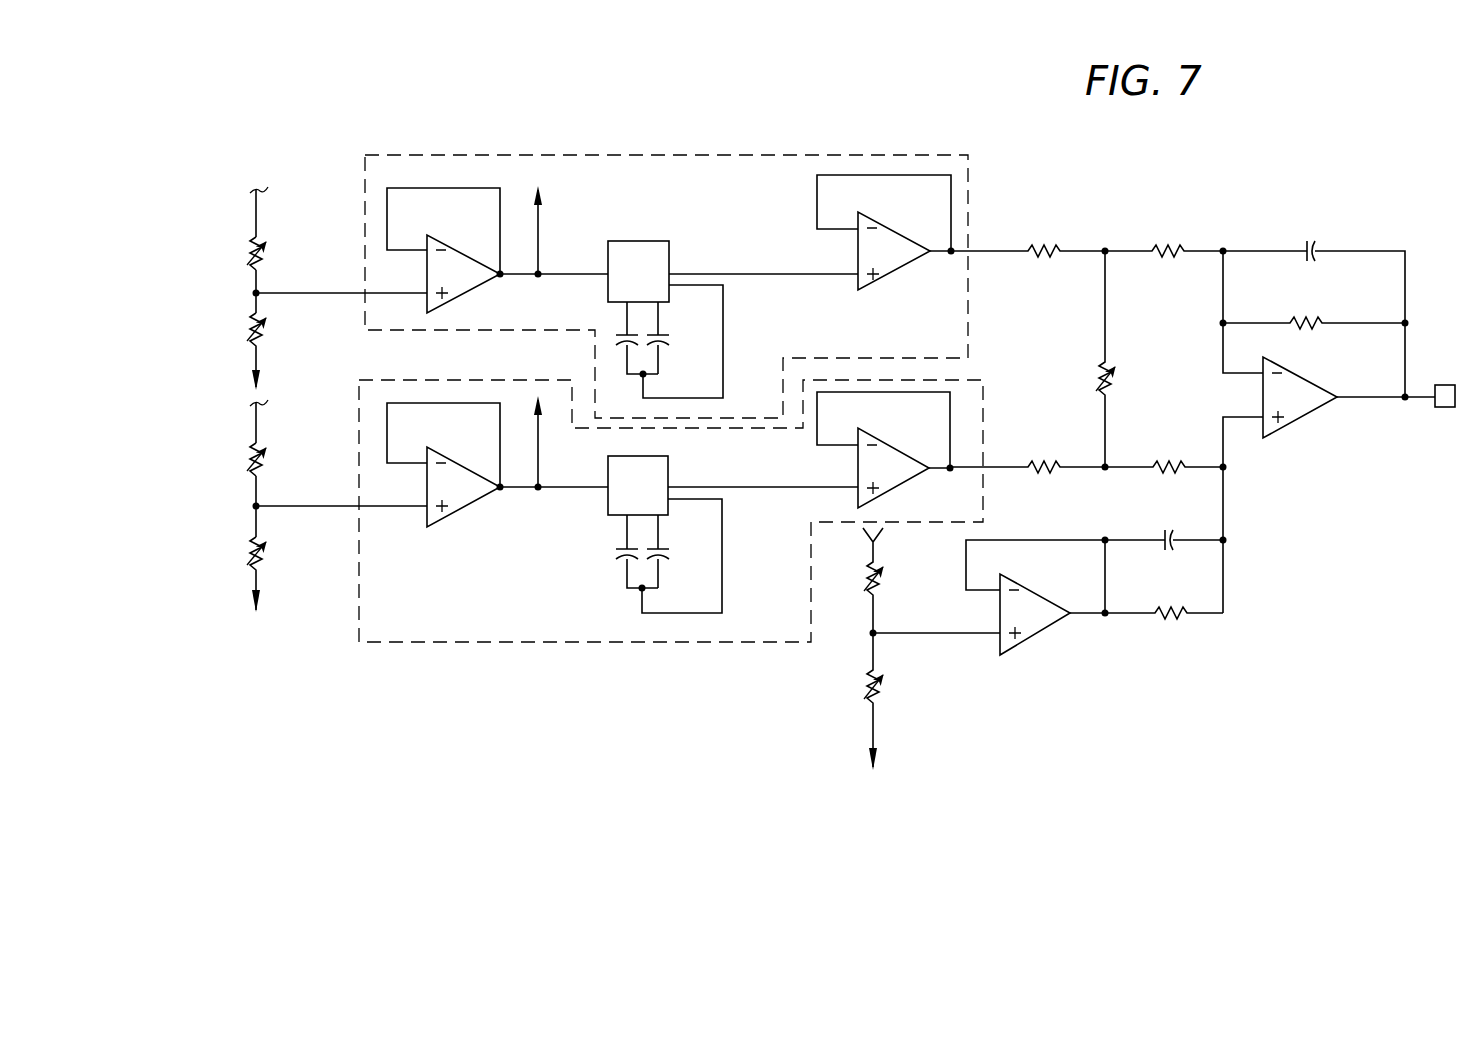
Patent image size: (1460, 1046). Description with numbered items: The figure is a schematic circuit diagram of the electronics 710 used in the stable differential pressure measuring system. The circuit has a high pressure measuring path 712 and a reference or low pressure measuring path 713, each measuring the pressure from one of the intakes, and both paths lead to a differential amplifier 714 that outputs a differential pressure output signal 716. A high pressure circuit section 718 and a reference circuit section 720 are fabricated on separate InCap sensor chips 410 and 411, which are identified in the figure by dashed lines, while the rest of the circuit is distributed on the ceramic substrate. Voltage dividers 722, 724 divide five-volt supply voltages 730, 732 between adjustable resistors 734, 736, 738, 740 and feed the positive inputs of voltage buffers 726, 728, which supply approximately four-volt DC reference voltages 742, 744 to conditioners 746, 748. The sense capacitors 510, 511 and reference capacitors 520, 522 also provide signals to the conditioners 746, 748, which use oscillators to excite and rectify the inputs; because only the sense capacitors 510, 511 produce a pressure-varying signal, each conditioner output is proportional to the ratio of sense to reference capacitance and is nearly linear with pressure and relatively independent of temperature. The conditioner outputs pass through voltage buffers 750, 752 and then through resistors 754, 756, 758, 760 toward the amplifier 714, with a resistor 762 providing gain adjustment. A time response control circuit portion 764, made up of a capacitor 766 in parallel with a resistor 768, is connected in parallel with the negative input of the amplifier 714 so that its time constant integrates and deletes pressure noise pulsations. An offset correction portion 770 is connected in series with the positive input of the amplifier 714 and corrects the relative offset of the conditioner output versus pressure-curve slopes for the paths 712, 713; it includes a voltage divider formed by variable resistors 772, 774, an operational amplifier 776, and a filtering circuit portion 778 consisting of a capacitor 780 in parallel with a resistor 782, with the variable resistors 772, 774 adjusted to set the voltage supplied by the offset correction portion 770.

The InCap sensor chip 411 is at (540, 138).
The InCap sensor chip 410 is at (718, 668).
The electronics 710 is at (510, 692).
The high pressure circuit section 718 is at (508, 596).
The reference circuit section 720 is at (632, 192).
The voltage divider 722 is at (244, 508).
The voltage divider 724 is at (244, 302).
The voltage buffer 726 is at (468, 496).
The voltage buffer 728 is at (468, 283).
The supply voltage 730 is at (262, 401).
The supply voltage 732 is at (262, 188).
The adjustable resistor 734 is at (256, 451).
The adjustable resistor 736 is at (256, 246).
The adjustable resistor 738 is at (258, 550).
The adjustable resistor 740 is at (258, 343).
The high pressure measuring path 712 is at (322, 509).
The low pressure measuring path 713 is at (322, 296).
The reference voltage 742 is at (540, 440).
The reference voltage 744 is at (540, 222).
The conditioner 746 is at (657, 470).
The conditioner 748 is at (658, 255).
The sense capacitor 510 is at (620, 552).
The sense capacitor 511 is at (620, 337).
The reference capacitor 520 is at (668, 558).
The reference capacitor 522 is at (668, 345).
The voltage buffer 750 is at (885, 480).
The voltage buffer 752 is at (885, 265).
The resistor 754 is at (1036, 462).
The resistor 756 is at (1040, 258).
The resistor 758 is at (1171, 464).
The resistor 760 is at (1168, 258).
The resistor 762 is at (1115, 383).
The differential amplifier 714 is at (1290, 405).
The differential pressure output signal 716 is at (1442, 408).
The time response control circuit portion 764 is at (1370, 232).
The capacitor 766 is at (1308, 246).
The resistor 768 is at (1312, 318).
The offset correction portion 770 is at (1047, 672).
The variable resistor 772 is at (878, 592).
The variable resistor 774 is at (878, 700).
The operational amplifier 776 is at (1032, 606).
The filtering circuit portion 778 is at (1250, 567).
The capacitor 780 is at (1166, 538).
The resistor 782 is at (1168, 620).